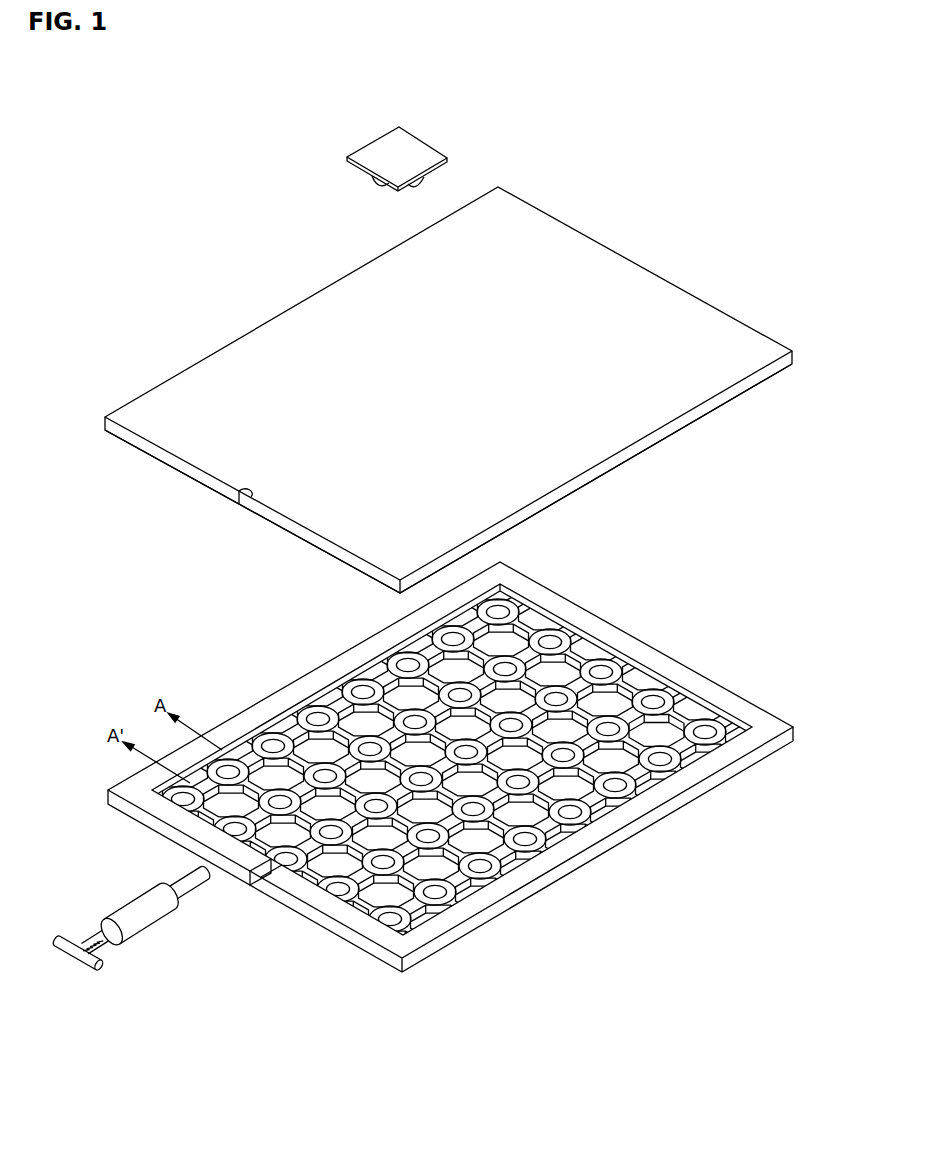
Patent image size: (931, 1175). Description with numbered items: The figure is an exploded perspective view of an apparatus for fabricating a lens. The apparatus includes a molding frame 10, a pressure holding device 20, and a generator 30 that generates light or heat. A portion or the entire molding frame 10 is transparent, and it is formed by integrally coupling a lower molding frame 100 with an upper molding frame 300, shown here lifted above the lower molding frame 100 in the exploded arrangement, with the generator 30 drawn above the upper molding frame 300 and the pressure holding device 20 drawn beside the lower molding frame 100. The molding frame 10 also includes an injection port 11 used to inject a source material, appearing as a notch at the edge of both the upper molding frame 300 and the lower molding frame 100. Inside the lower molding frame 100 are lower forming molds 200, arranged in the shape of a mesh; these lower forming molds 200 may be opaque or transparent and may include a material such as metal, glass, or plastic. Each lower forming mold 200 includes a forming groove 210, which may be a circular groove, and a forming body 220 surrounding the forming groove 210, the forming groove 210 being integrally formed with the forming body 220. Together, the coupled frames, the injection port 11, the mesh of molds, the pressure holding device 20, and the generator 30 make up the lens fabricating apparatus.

The molding frame 10 is at (609, 232).
The injection port 11 is at (241, 502).
The pressure holding device 20 is at (150, 946).
The generator 30 is at (360, 132).
The lower molding frame 100 is at (451, 757).
The lower forming mold 200 is at (652, 692).
The forming groove 210 is at (658, 700).
The forming body 220 is at (678, 718).
The upper molding frame 300 is at (703, 408).